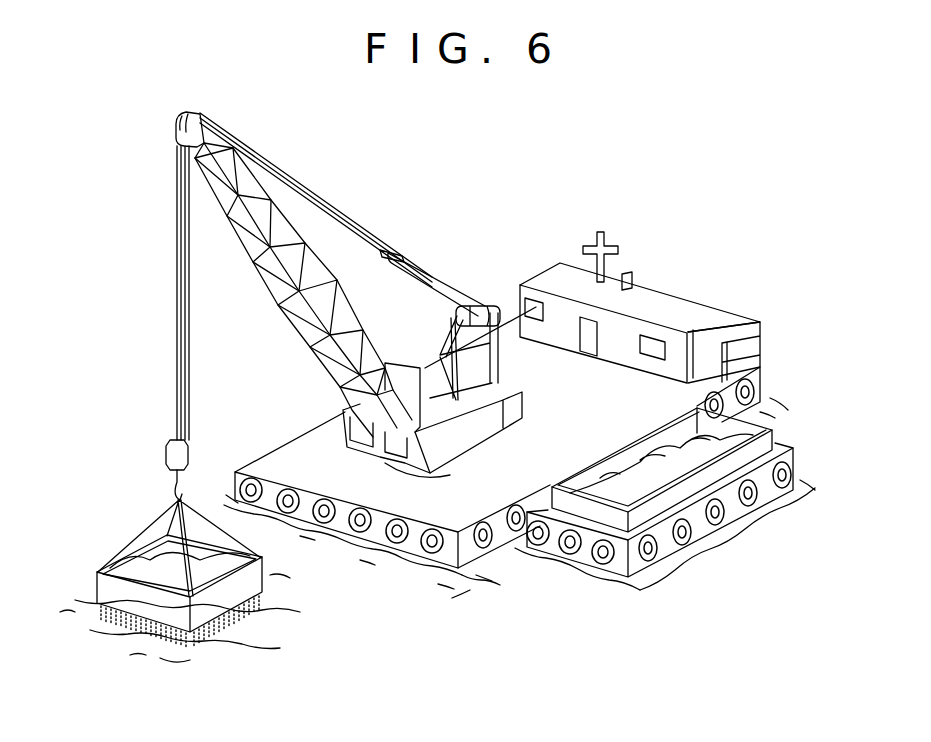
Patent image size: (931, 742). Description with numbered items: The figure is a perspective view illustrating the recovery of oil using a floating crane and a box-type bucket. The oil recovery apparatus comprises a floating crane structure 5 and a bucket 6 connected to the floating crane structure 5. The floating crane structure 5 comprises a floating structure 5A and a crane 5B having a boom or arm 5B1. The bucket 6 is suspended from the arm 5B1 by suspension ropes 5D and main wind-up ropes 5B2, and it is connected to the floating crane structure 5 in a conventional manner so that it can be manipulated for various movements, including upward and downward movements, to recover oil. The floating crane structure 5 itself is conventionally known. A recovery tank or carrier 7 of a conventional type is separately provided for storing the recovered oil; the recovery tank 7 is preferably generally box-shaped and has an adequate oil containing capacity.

The floating crane structure 5 is at (662, 267).
The floating structure 5A is at (680, 310).
The crane 5B is at (478, 430).
The boom or arm 5B1 is at (262, 203).
The main wind-up ropes 5B2 is at (177, 318).
The suspension ropes 5D is at (130, 538).
The bucket 6 is at (243, 583).
The recovery tank or carrier 7 is at (763, 445).